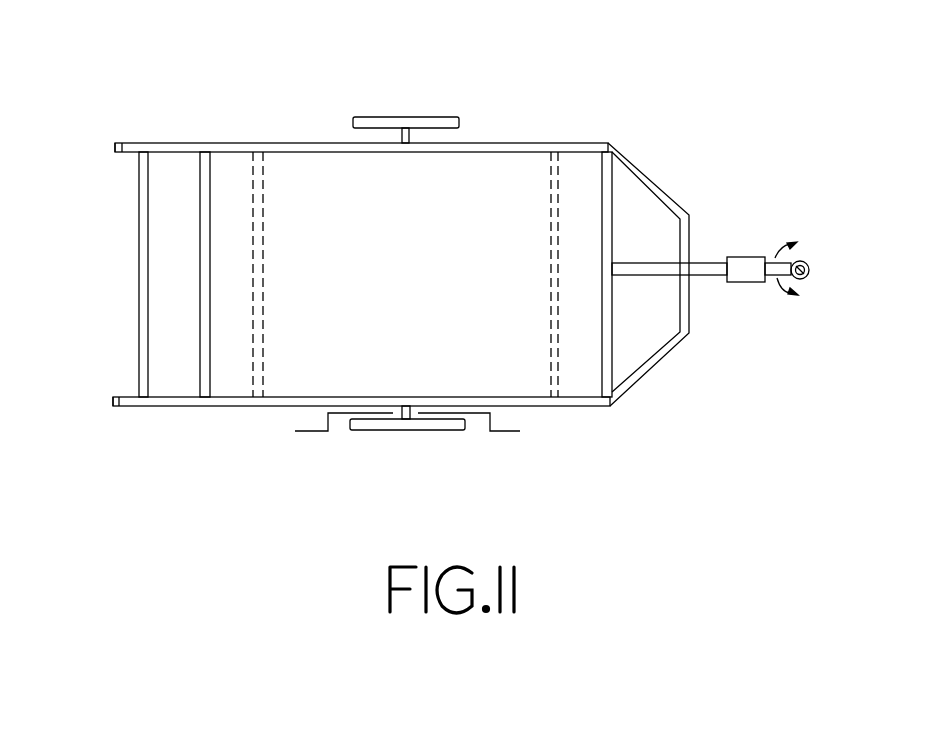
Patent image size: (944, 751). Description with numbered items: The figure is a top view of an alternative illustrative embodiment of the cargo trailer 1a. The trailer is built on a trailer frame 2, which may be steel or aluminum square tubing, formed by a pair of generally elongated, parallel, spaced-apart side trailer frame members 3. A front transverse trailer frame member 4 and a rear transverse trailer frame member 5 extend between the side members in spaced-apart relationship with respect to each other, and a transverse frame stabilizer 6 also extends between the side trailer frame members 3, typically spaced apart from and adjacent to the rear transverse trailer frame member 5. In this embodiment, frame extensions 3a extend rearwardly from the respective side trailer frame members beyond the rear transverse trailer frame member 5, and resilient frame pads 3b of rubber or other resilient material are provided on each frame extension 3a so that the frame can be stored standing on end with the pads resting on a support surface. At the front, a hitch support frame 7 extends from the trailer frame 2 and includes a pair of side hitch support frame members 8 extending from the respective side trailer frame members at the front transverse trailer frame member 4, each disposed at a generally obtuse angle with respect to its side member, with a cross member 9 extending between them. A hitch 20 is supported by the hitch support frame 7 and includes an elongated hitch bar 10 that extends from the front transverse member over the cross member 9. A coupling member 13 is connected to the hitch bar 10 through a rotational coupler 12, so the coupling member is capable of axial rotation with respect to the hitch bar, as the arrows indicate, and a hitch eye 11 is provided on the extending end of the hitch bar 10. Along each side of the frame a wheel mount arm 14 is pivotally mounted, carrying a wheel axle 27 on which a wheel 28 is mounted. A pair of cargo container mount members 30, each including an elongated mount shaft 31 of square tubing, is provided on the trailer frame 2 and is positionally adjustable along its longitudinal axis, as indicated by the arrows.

The cargo trailer 1a is at (690, 103).
The trailer frame 2 is at (327, 278).
The side trailer frame members 3 is at (325, 145).
The frame extensions 3a is at (125, 148).
The resilient frame pads 3b is at (113, 147).
The front transverse trailer frame member 4 is at (603, 248).
The rear transverse trailer frame member 5 is at (143, 368).
The transverse frame stabilizer 6 is at (208, 302).
The hitch support frame 7 is at (642, 423).
The side hitch support frame members 8 is at (652, 188).
The cross member 9 is at (685, 307).
The hitch bar 10 is at (708, 272).
The hitch eye 11 is at (803, 280).
The rotational coupler 12 is at (752, 267).
The coupling member 13 is at (773, 284).
The wheel mount arm 14 is at (312, 425).
The hitch 20 is at (650, 294).
The wheel axle 27 is at (409, 137).
The wheel 28 is at (432, 105).
The cargo container mount members 30 is at (270, 215).
The mount shaft 31 is at (263, 252).